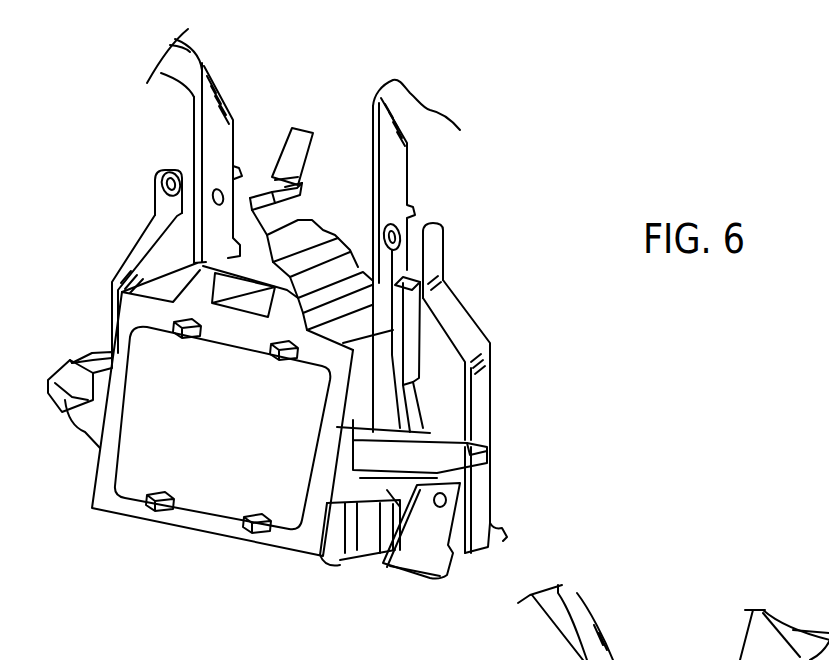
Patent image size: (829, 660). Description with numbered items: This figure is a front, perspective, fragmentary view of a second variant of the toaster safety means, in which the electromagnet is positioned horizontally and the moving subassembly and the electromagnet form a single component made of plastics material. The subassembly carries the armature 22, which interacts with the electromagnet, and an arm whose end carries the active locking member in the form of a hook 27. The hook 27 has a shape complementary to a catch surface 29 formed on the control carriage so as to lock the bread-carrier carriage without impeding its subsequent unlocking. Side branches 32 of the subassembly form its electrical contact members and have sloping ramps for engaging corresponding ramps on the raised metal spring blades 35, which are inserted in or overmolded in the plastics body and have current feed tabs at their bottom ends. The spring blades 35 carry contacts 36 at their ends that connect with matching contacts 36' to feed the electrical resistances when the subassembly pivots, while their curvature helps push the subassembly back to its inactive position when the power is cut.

The armature 22 is at (147, 463).
The hook 27 is at (297, 150).
The catch surface 29 is at (270, 197).
The side branch 32 is at (58, 380).
The spring blade 35 is at (130, 257).
The contact 36 is at (150, 156).
The matching contact 36' is at (436, 209).